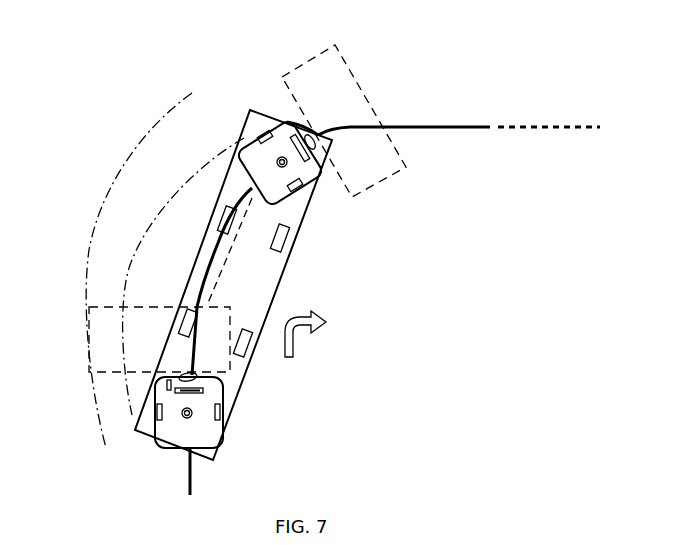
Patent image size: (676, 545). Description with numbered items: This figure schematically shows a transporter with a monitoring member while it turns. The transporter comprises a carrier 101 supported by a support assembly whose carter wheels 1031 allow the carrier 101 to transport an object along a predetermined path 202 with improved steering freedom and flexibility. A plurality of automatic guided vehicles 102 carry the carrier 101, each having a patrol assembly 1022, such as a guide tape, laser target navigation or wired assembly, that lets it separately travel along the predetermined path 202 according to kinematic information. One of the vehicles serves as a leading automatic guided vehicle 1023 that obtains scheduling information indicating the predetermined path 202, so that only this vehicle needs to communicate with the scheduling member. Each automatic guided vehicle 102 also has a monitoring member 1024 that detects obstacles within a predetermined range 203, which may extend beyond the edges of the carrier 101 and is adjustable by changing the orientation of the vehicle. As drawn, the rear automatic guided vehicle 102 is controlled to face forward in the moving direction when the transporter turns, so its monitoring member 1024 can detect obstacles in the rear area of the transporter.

The carrier 101 is at (251, 110).
The automatic guided vehicle 102 is at (168, 435).
The predetermined path 202 is at (488, 124).
The predetermined range 203 is at (322, 80).
The patrol assembly 1022 is at (203, 392).
The leading automatic guided vehicle 1023 is at (313, 167).
The monitoring member 1024 is at (203, 374).
The carter wheel 1031 is at (284, 239).